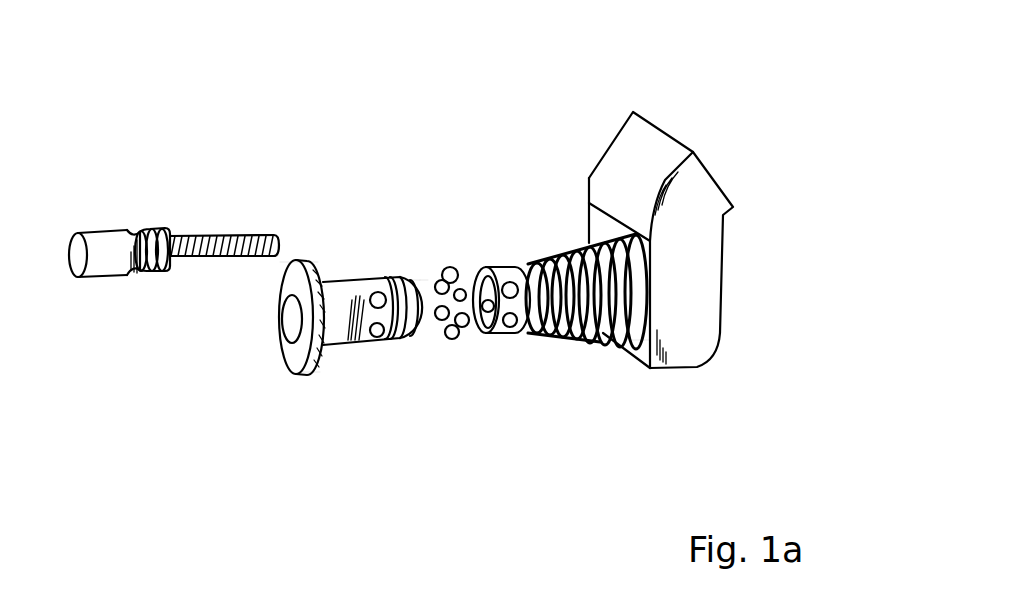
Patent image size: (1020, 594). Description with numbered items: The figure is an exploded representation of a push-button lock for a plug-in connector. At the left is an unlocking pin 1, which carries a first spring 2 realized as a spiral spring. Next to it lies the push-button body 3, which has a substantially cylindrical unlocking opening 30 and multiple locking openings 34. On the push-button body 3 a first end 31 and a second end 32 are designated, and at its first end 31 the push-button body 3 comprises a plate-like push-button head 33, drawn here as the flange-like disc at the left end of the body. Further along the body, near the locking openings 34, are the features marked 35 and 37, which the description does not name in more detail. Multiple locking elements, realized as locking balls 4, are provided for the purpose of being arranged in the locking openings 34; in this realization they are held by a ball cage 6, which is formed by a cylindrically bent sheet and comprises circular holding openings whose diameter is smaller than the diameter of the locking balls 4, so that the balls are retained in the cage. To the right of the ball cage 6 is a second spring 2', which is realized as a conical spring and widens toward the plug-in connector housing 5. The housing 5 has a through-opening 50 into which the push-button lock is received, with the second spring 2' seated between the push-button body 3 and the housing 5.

The unlocking pin 1 is at (105, 223).
The first spring 2 is at (224, 137).
The second spring 2' is at (586, 380).
The push-button body 3 is at (380, 355).
The locking balls 4 is at (460, 272).
The plug-in connector housing 5 is at (640, 155).
The ball cage 6 is at (498, 336).
The unlocking opening 30 is at (295, 347).
The first end 31 is at (313, 358).
The second end 32 is at (425, 282).
The push-button head 33 is at (294, 282).
The locking openings 34 is at (377, 293).
The holes 35 is at (341, 296).
The body section 37 is at (410, 290).
The through-opening 50 is at (628, 346).